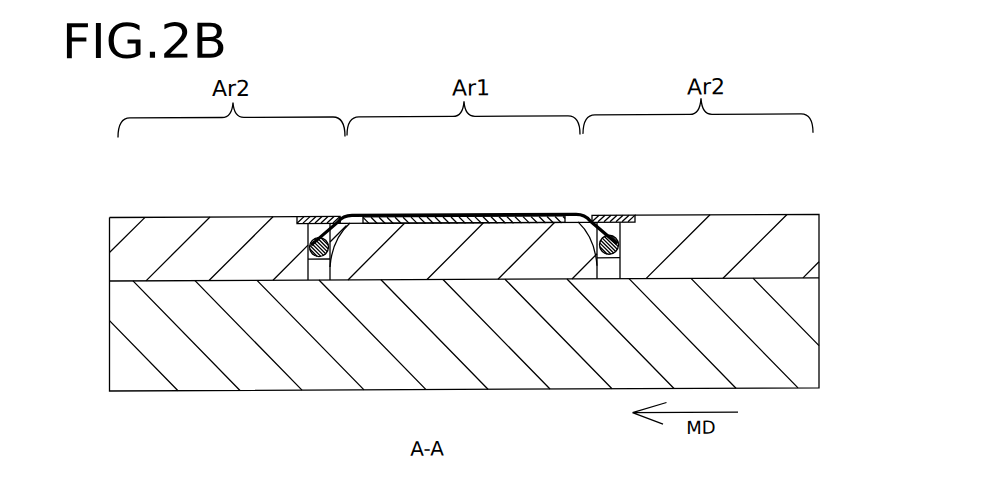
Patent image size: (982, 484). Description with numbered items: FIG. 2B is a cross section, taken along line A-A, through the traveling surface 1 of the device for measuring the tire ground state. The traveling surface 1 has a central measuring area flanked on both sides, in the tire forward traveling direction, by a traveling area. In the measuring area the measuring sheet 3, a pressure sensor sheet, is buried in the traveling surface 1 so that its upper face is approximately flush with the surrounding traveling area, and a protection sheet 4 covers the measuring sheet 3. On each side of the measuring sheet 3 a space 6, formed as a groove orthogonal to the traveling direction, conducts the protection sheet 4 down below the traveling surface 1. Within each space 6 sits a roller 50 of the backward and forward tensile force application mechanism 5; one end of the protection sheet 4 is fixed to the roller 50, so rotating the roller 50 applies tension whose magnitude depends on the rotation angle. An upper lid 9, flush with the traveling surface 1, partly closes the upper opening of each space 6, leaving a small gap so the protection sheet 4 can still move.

The traveling surface 1 is at (206, 218).
The measuring sheet 3 is at (443, 216).
The protection sheet 4 is at (513, 218).
The backward and forward tensile force application mechanism 5 is at (308, 262).
The roller 50 is at (332, 262).
The space 6 is at (325, 221).
The upper lid 9 is at (318, 238).